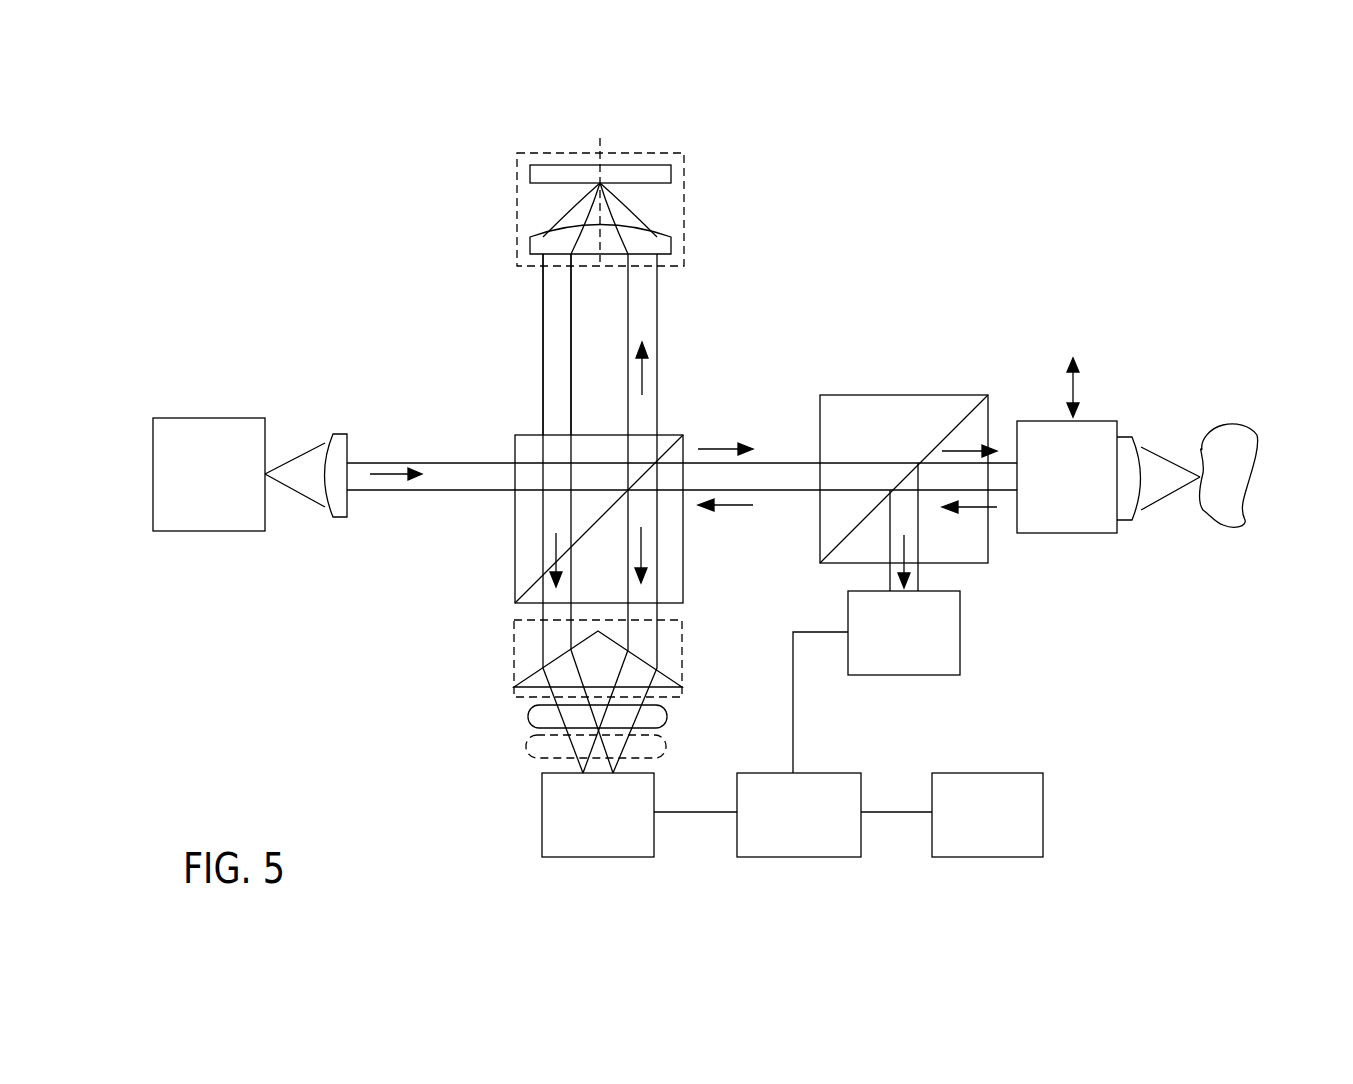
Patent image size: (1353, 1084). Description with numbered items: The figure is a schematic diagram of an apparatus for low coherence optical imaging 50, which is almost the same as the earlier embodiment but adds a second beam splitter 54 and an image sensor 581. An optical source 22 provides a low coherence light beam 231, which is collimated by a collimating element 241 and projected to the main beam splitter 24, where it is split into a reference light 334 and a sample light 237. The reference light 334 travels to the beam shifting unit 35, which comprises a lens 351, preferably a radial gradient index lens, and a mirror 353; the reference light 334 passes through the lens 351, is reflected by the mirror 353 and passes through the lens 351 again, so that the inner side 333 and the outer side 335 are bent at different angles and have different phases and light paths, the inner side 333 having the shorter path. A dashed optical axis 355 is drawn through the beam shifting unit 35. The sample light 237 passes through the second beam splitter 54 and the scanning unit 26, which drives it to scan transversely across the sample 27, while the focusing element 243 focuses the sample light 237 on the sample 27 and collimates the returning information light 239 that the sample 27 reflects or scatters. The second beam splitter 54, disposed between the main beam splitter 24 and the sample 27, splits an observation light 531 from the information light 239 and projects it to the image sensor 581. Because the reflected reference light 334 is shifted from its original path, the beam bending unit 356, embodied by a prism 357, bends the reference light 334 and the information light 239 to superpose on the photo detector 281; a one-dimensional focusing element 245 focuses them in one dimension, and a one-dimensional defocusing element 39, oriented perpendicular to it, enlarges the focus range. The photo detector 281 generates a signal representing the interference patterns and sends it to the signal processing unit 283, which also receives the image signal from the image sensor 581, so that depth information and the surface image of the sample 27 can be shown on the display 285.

The apparatus for low coherence optical imaging 50 is at (241, 240).
The optical source 22 is at (180, 418).
The collimating element 241 is at (341, 434).
The low coherence light beam 231 is at (387, 468).
The main beam splitter 24 is at (515, 435).
The inner side of the reference light 333 is at (571, 322).
The outer side of the reference light 335 is at (543, 365).
The reference light 334 is at (645, 372).
The sample light 237 is at (730, 447).
The information light 239 is at (735, 506).
The beam shifting unit 35 is at (517, 208).
The optical axis 355 is at (600, 140).
The mirror 353 is at (658, 165).
The lens 351 is at (668, 237).
The second beam splitter 54 is at (875, 395).
The observation light 531 is at (903, 550).
The image sensor 581 is at (960, 635).
The scanning unit 26 is at (1117, 421).
The focusing element 243 is at (1128, 521).
The sample 27 is at (1255, 430).
The beam bending unit 356 is at (682, 668).
The prism 357 is at (530, 667).
The one-dimensional focusing element 245 is at (528, 710).
The one-dimensional defocusing element 39 is at (667, 750).
The photo detector 281 is at (540, 798).
The signal processing unit 283 is at (820, 772).
The display 285 is at (1015, 772).